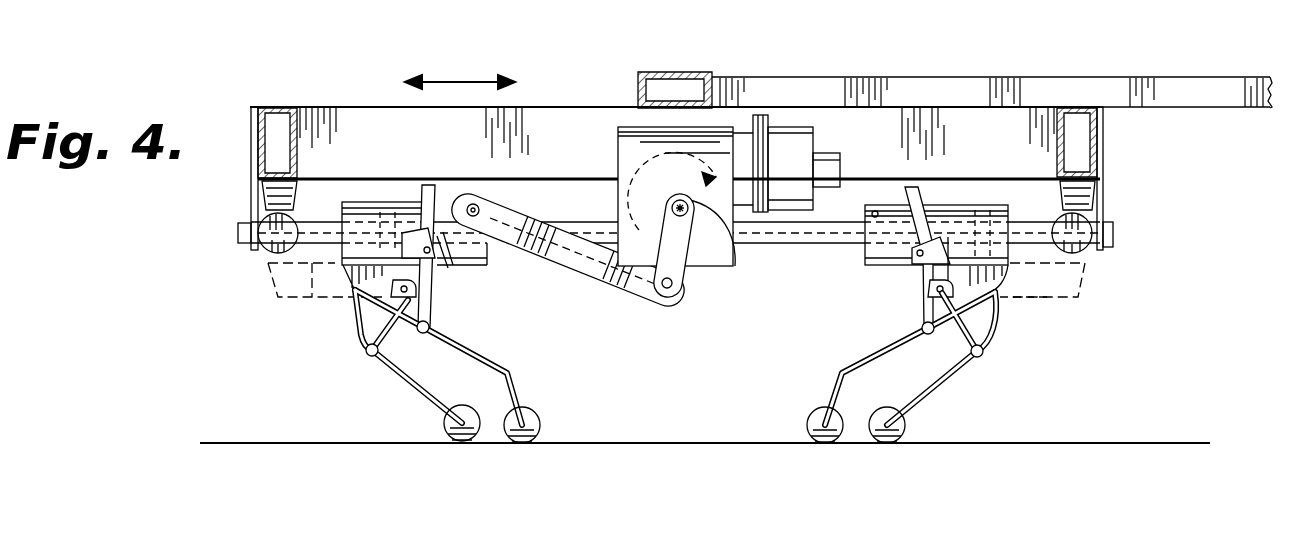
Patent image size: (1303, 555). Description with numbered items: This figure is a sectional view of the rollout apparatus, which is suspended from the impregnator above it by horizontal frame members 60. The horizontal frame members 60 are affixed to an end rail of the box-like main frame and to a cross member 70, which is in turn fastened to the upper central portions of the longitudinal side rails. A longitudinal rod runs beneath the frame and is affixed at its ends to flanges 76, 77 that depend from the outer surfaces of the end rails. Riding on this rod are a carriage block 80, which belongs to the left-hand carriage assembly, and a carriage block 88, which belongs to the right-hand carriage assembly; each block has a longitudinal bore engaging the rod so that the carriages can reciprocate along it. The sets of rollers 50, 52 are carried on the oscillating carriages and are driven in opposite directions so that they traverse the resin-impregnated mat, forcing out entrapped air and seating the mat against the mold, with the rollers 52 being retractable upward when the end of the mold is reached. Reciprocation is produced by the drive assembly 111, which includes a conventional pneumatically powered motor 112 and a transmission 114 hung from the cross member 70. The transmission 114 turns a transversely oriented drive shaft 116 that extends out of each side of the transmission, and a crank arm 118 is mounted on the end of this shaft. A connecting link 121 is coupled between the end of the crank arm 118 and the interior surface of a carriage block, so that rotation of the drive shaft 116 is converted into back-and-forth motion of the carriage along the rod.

The set of rollers 50 is at (430, 428).
The set of rollers 52 is at (946, 420).
The horizontal frame members 60 is at (1205, 82).
The cross member 70 is at (680, 72).
The flange 76 is at (250, 195).
The flange 77 is at (1103, 190).
The carriage block 80 is at (383, 203).
The carriage block 88 is at (948, 212).
The drive assembly 111 is at (658, 313).
The pneumatically powered motor 112 is at (778, 145).
The transmission 114 is at (715, 148).
The drive shaft 116 is at (733, 261).
The crank arm 118 is at (676, 244).
The connecting link 121 is at (582, 258).